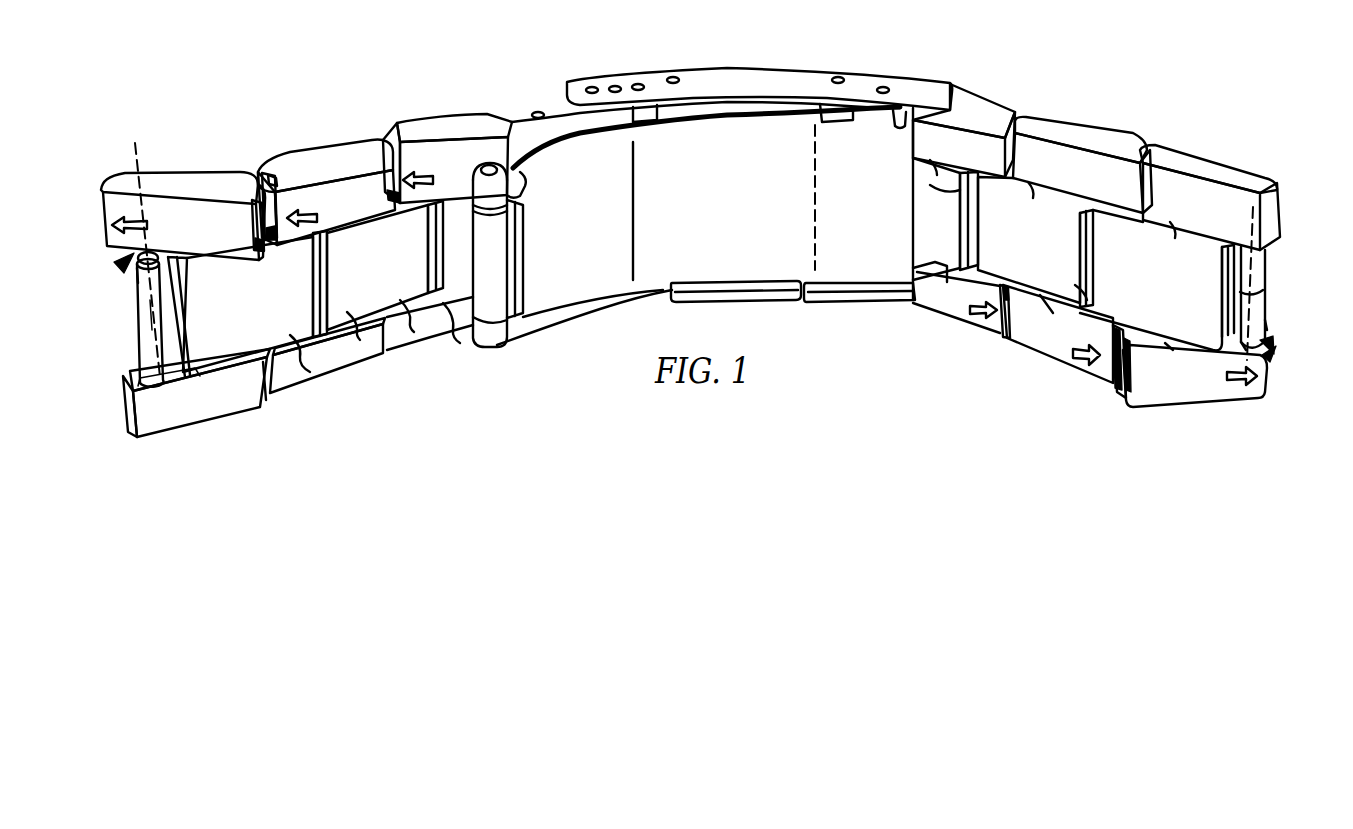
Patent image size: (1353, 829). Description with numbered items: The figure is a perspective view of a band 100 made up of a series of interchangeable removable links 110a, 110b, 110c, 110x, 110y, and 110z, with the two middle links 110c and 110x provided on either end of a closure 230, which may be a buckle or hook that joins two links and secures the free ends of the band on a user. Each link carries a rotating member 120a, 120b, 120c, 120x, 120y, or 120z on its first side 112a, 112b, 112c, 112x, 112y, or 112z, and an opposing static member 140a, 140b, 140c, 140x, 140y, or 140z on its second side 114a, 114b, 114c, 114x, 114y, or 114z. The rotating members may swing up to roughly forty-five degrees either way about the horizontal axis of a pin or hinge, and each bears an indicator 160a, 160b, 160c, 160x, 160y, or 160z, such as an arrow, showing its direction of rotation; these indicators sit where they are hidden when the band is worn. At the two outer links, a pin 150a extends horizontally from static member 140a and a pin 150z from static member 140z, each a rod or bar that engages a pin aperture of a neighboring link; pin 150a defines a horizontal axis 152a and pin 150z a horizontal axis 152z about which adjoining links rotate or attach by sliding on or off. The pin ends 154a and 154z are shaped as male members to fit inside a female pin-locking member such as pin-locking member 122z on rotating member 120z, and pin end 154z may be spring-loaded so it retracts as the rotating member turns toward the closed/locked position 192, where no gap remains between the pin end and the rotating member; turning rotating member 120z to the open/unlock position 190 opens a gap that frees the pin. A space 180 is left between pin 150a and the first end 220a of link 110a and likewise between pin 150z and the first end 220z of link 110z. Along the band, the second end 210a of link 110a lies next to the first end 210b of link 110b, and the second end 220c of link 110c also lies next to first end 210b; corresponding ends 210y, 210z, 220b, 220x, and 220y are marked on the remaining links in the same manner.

The band 100 is at (308, 70).
The removable link 110a is at (290, 335).
The removable link 110b is at (427, 325).
The removable link 110c is at (455, 250).
The removable link 110x is at (953, 230).
The removable link 110y is at (1028, 222).
The removable link 110z is at (1185, 288).
The first side 112a is at (220, 243).
The first side 112b is at (340, 235).
The first side 112c is at (510, 183).
The first side 112x is at (935, 256).
The first side 112y is at (1052, 313).
The first side 112z is at (1173, 348).
The second side 114a is at (260, 400).
The second side 114b is at (350, 327).
The second side 114c is at (520, 292).
The second side 114x is at (937, 163).
The second side 114y is at (1033, 185).
The second side 114z is at (1175, 223).
The rotating member 120a is at (183, 168).
The rotating member 120b is at (365, 153).
The rotating member 120c is at (448, 132).
The rotating member 120x is at (943, 307).
The rotating member 120y is at (1015, 340).
The rotating member 120z is at (1157, 387).
The pin-locking member 122z is at (1273, 342).
The static member 140a is at (203, 413).
The static member 140b is at (330, 363).
The static member 140c is at (438, 325).
The static member 140x is at (970, 100).
The static member 140y is at (1083, 133).
The static member 140z is at (1235, 170).
The pin 150a is at (140, 311).
The pin 150z is at (1262, 283).
The horizontal axis 152a is at (137, 162).
The horizontal axis 152z is at (1267, 323).
The pin end 154a is at (137, 275).
The pin end 154z is at (1263, 367).
The indicator 160a is at (120, 220).
The indicator 160b is at (325, 232).
The indicator 160c is at (427, 170).
The indicator 160x is at (975, 315).
The indicator 160y is at (1077, 360).
The indicator 160z is at (1240, 387).
The space 180 is at (165, 327).
The open/unlock position 190 is at (116, 268).
The closed/locked position 192 is at (273, 177).
The second end 210a is at (328, 300).
The first end 210b is at (440, 218).
The knuckle 210y is at (950, 197).
The knuckle 210z is at (1087, 272).
The first end 220a is at (150, 357).
The channel 220b is at (318, 277).
The second end 220c is at (428, 260).
The channel 220x is at (980, 235).
The channel 220y is at (1092, 232).
The first end 220z is at (1260, 263).
The closure 230 is at (695, 273).